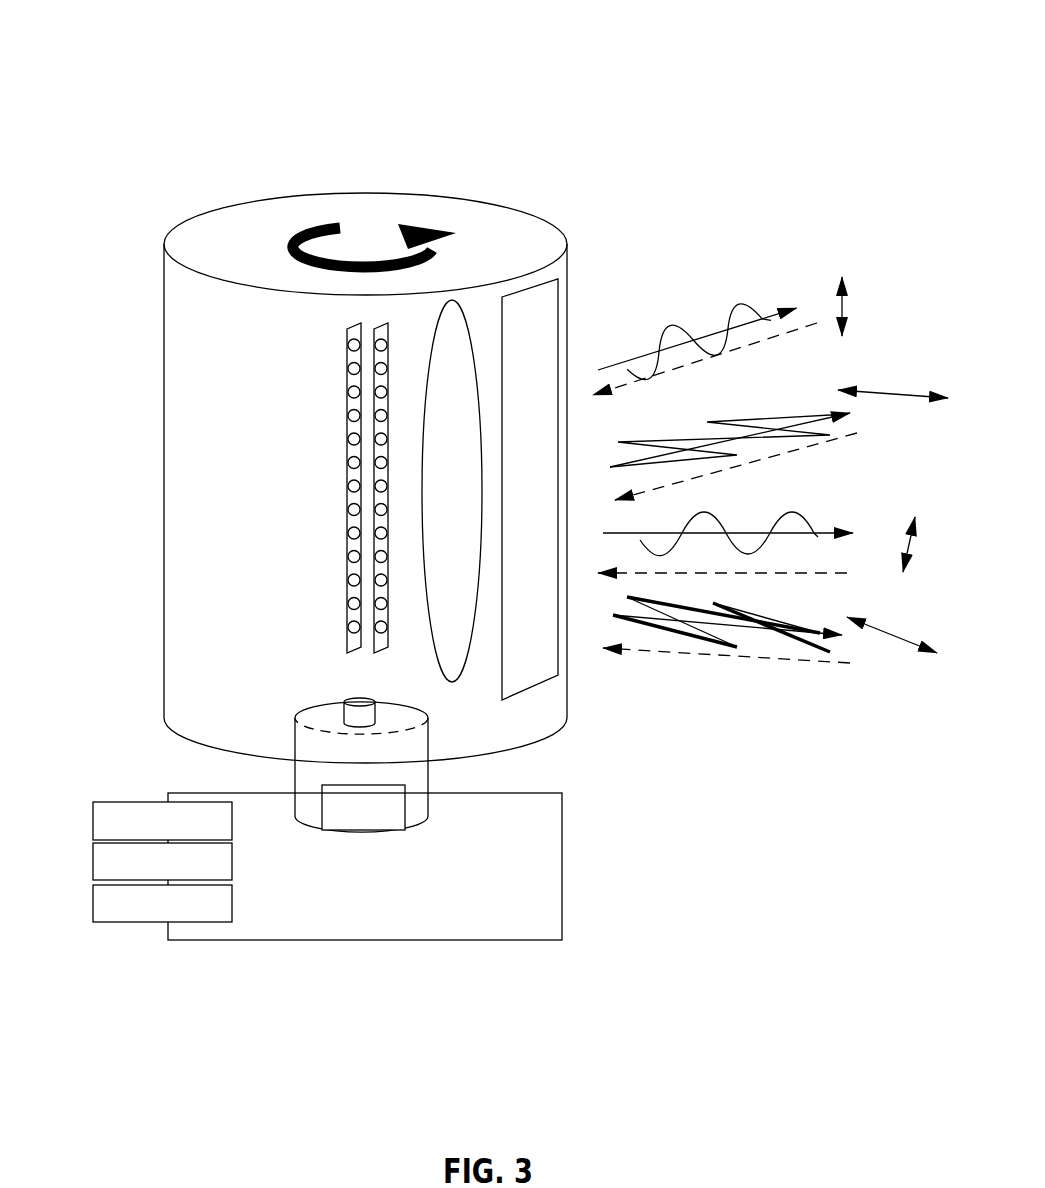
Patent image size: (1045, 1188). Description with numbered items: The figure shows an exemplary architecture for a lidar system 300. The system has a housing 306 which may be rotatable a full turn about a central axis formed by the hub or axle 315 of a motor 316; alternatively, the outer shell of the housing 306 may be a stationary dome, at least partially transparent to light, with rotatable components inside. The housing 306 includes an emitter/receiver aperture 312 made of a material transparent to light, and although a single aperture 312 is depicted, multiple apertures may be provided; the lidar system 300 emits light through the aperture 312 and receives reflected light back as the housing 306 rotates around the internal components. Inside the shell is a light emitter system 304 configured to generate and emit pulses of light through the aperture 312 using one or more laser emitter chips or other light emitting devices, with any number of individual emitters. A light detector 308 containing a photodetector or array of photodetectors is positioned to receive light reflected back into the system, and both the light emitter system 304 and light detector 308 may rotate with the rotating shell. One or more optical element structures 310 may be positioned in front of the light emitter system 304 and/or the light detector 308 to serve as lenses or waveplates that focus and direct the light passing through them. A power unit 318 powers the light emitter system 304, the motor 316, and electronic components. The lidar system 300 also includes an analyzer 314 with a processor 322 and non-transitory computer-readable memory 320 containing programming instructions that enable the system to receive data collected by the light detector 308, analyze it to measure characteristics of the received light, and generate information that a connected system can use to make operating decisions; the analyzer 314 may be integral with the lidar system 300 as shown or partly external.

The lidar system 300 is at (125, 85).
The light emitter system 304 is at (379, 323).
The housing 306 is at (163, 300).
The light detector 308 is at (345, 327).
The optical element structure 310 is at (450, 300).
The emitter/receiver aperture 312 is at (538, 282).
The analyzer 314 is at (563, 853).
The hub or axle 315 is at (343, 699).
The motor 316 is at (303, 823).
The power unit 318 is at (92, 814).
The non-transitory computer-readable memory 320 is at (92, 856).
The processor 322 is at (92, 898).